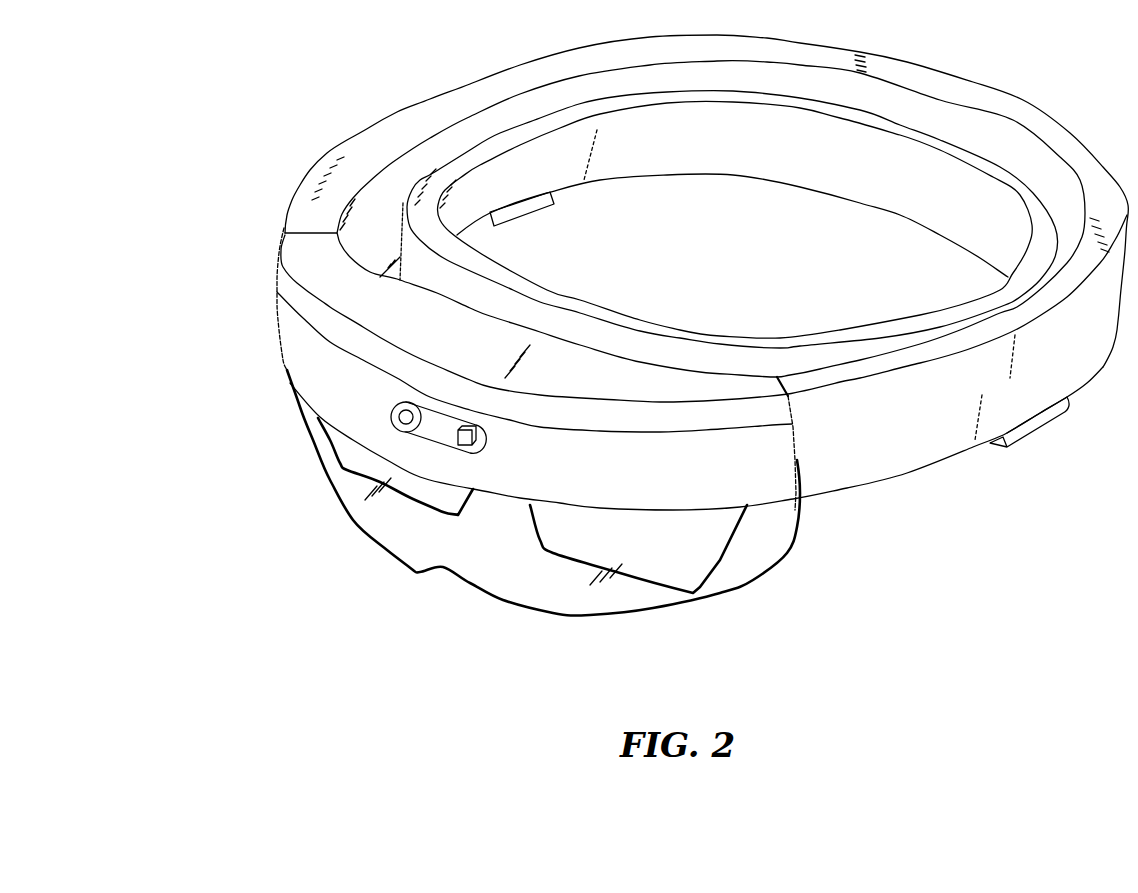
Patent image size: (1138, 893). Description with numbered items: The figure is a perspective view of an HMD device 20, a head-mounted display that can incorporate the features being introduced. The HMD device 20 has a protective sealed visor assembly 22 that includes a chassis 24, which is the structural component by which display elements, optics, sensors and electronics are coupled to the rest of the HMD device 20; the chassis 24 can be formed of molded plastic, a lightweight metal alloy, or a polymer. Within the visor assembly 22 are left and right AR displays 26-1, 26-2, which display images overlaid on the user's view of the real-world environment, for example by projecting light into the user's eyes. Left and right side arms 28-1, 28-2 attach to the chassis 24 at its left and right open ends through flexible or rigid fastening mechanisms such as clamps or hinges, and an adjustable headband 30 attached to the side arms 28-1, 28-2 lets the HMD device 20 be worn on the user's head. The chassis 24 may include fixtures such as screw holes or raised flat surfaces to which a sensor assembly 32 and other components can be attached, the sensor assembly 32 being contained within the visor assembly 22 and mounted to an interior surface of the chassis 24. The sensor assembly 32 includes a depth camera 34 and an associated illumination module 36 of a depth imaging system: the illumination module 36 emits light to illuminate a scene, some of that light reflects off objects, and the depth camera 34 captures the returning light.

The HMD device 20 is at (262, 93).
The visor assembly 22 is at (640, 610).
The chassis 24 is at (297, 280).
The left AR display 26-1 is at (720, 560).
The right AR display 26-2 is at (467, 515).
The left side arm 28-1 is at (907, 472).
The right side arm 28-2 is at (397, 113).
The adjustable headband 30 is at (513, 277).
The sensor assembly 32 is at (473, 453).
The depth camera 34 is at (413, 405).
The illumination module 36 is at (480, 427).